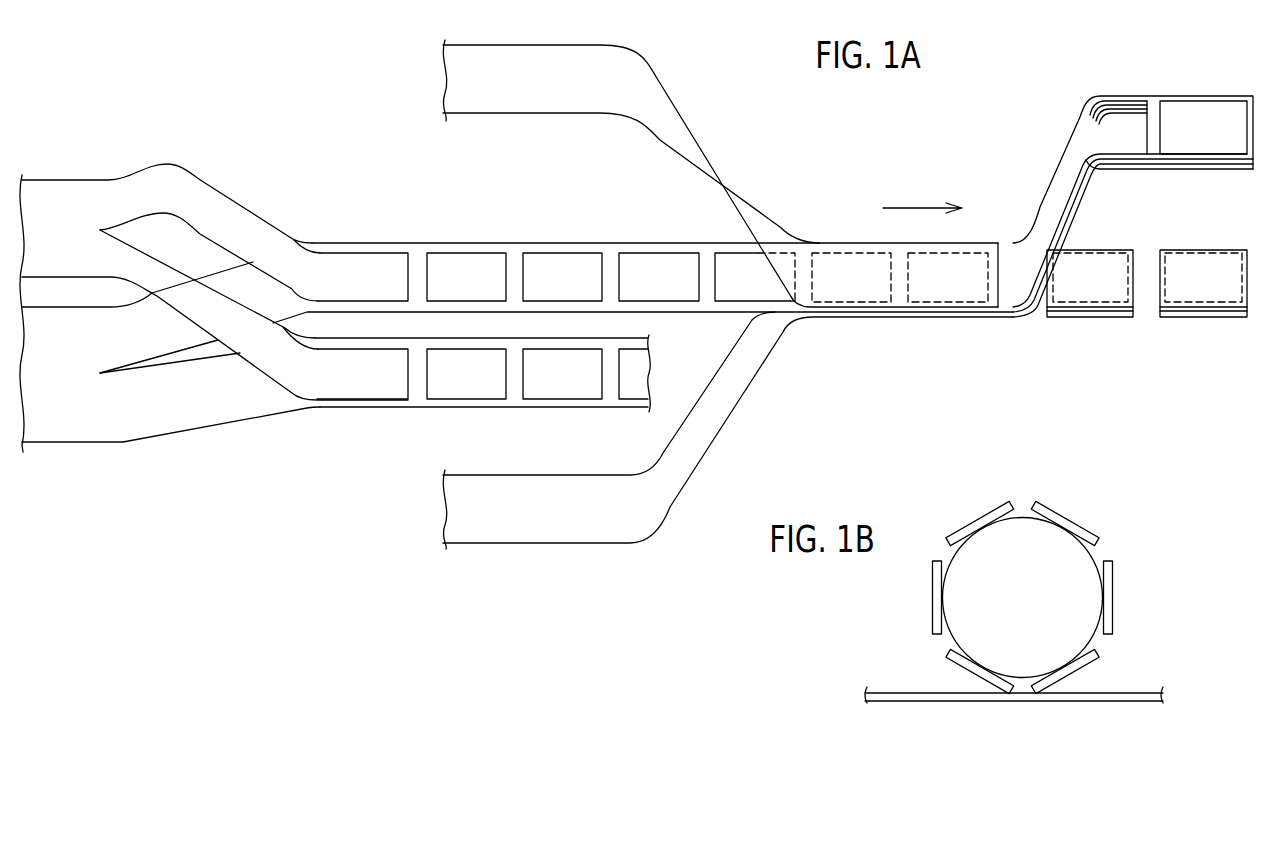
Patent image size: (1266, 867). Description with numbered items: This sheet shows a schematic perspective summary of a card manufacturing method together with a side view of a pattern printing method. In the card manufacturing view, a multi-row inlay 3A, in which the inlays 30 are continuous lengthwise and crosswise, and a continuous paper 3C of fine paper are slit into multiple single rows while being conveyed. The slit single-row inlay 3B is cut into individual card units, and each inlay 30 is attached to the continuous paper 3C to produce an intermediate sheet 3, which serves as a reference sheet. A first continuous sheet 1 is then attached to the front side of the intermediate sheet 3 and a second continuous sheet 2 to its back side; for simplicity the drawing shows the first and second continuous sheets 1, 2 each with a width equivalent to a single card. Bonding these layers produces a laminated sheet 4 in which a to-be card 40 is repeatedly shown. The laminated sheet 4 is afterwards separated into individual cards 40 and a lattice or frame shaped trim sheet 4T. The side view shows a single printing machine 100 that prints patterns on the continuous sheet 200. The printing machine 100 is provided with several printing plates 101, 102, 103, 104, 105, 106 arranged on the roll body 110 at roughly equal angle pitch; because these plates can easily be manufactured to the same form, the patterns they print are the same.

In FIG. 1A, the first continuous sheet 1 is at (503, 75).
In FIG. 1A, the second continuous sheet 2 is at (540, 525).
In FIG. 1A, the intermediate sheet 3 is at (575, 245).
In FIG. 1A, the multi-row inlay 3A is at (72, 202).
In FIG. 1A, the single-row inlay 3B is at (178, 273).
In FIG. 1A, the continuous paper 3C is at (75, 422).
In FIG. 1A, the laminated sheet 4 is at (843, 248).
In FIG. 1A, the trim sheet 4T is at (1136, 96).
In FIG. 1A, the inlay 30 is at (457, 270).
In FIG. 1A, the card 40 is at (1083, 297).
In FIG. 1B, the printing machine 100 is at (1027, 588).
In FIG. 1B, the printing plate 101 is at (973, 677).
In FIG. 1B, the printing plate 102 is at (930, 602).
In FIG. 1B, the printing plate 103 is at (978, 522).
In FIG. 1B, the printing plate 104 is at (1083, 533).
In FIG. 1B, the printing plate 105 is at (1112, 573).
In FIG. 1B, the printing plate 106 is at (1087, 665).
In FIG. 1B, the roll body 110 is at (1083, 563).
In FIG. 1B, the continuous sheet 200 is at (897, 697).